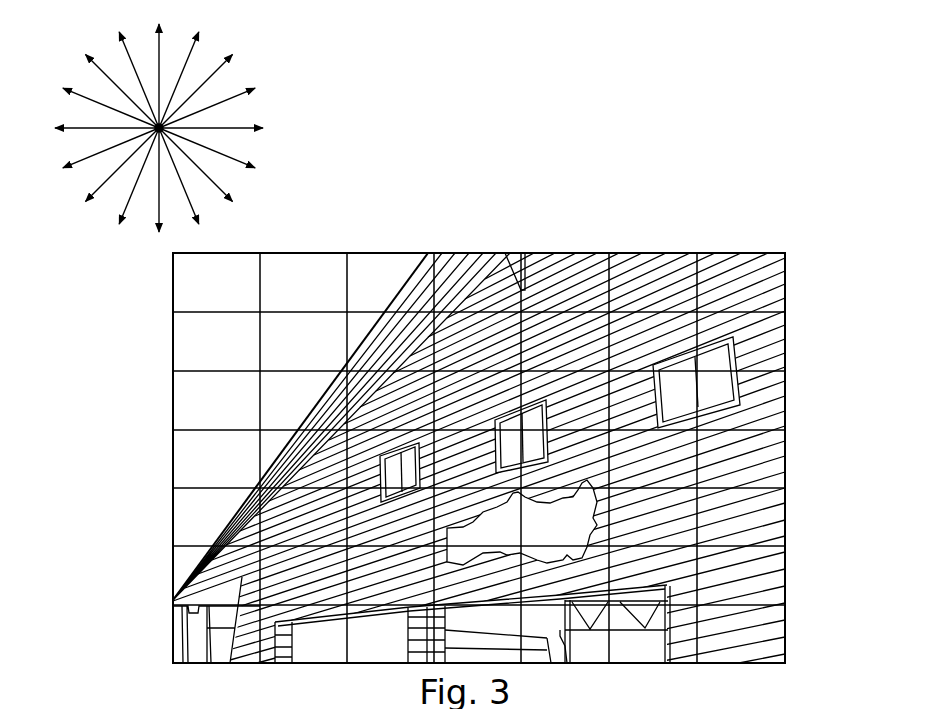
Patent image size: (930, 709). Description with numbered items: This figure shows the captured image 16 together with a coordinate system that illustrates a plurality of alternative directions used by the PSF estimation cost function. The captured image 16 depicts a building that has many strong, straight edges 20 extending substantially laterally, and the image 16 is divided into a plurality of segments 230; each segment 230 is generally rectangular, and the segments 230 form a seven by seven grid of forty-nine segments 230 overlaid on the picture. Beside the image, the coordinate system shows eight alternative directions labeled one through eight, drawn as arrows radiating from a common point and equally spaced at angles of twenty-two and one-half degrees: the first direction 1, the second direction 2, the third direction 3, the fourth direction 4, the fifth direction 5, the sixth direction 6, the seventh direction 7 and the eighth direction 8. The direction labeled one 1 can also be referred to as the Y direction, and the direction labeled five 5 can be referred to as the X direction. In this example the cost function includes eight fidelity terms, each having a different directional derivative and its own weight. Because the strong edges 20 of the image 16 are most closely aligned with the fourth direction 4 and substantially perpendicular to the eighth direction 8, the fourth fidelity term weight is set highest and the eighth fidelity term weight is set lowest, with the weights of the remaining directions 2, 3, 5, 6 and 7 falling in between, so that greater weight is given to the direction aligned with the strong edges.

The first direction 1 is at (163, 37).
The second direction 2 is at (192, 43).
The third direction 3 is at (231, 65).
The fourth direction 4 is at (252, 93).
The fifth direction 5 is at (258, 135).
The sixth direction 6 is at (243, 166).
The seventh direction 7 is at (219, 196).
The eighth direction 8 is at (195, 215).
The captured image 16 is at (465, 458).
The strong straight edges 20 is at (520, 458).
The segments 230 is at (760, 300).